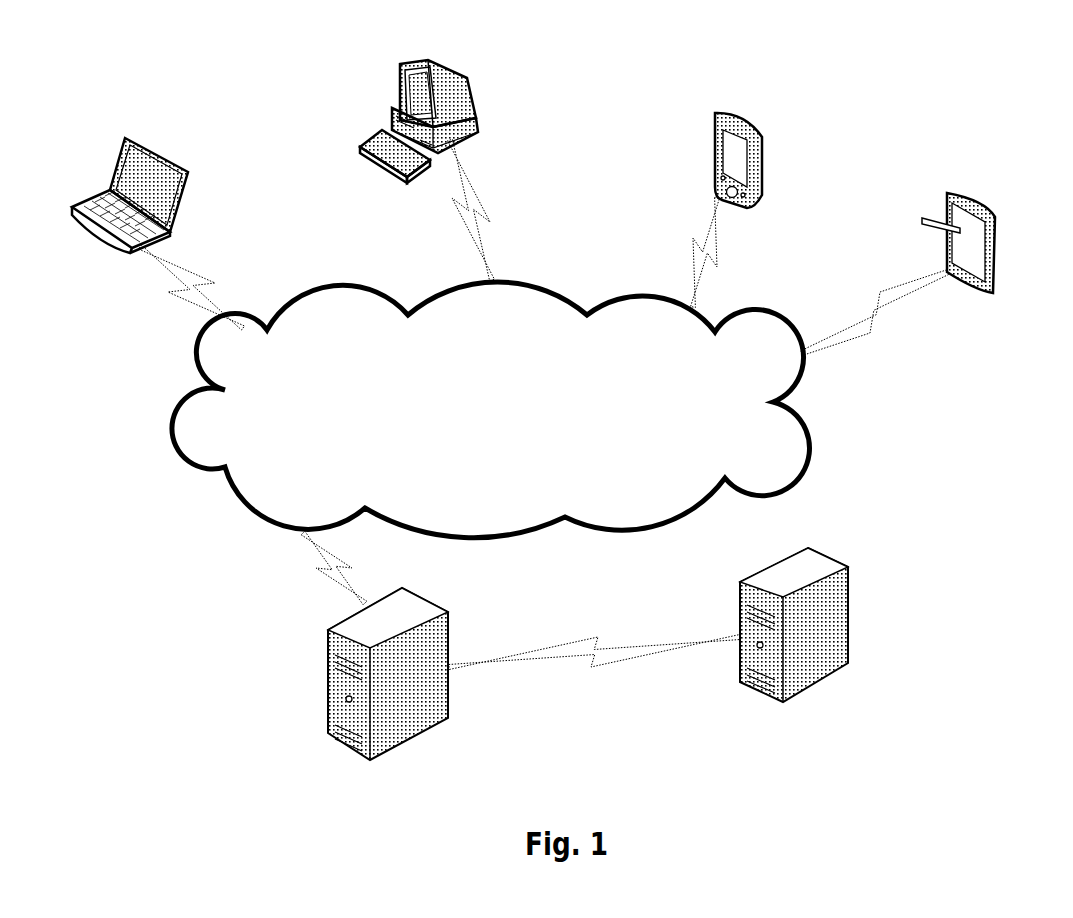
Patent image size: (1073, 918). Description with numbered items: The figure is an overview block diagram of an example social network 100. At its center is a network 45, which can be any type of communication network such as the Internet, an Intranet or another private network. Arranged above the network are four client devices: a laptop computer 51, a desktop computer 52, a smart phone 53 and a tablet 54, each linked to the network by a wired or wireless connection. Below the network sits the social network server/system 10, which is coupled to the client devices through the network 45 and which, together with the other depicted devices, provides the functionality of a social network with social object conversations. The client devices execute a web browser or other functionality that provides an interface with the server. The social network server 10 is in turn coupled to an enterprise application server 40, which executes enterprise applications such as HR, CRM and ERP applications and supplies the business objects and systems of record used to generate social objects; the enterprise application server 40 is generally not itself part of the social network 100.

The social network 100 is at (893, 100).
The social network server/system 10 is at (382, 699).
The enterprise application server 40 is at (801, 649).
The network 45 is at (491, 410).
The laptop computer 51 is at (130, 181).
The desktop computer 52 is at (419, 108).
The smart phone 53 is at (741, 149).
The tablet 54 is at (972, 231).